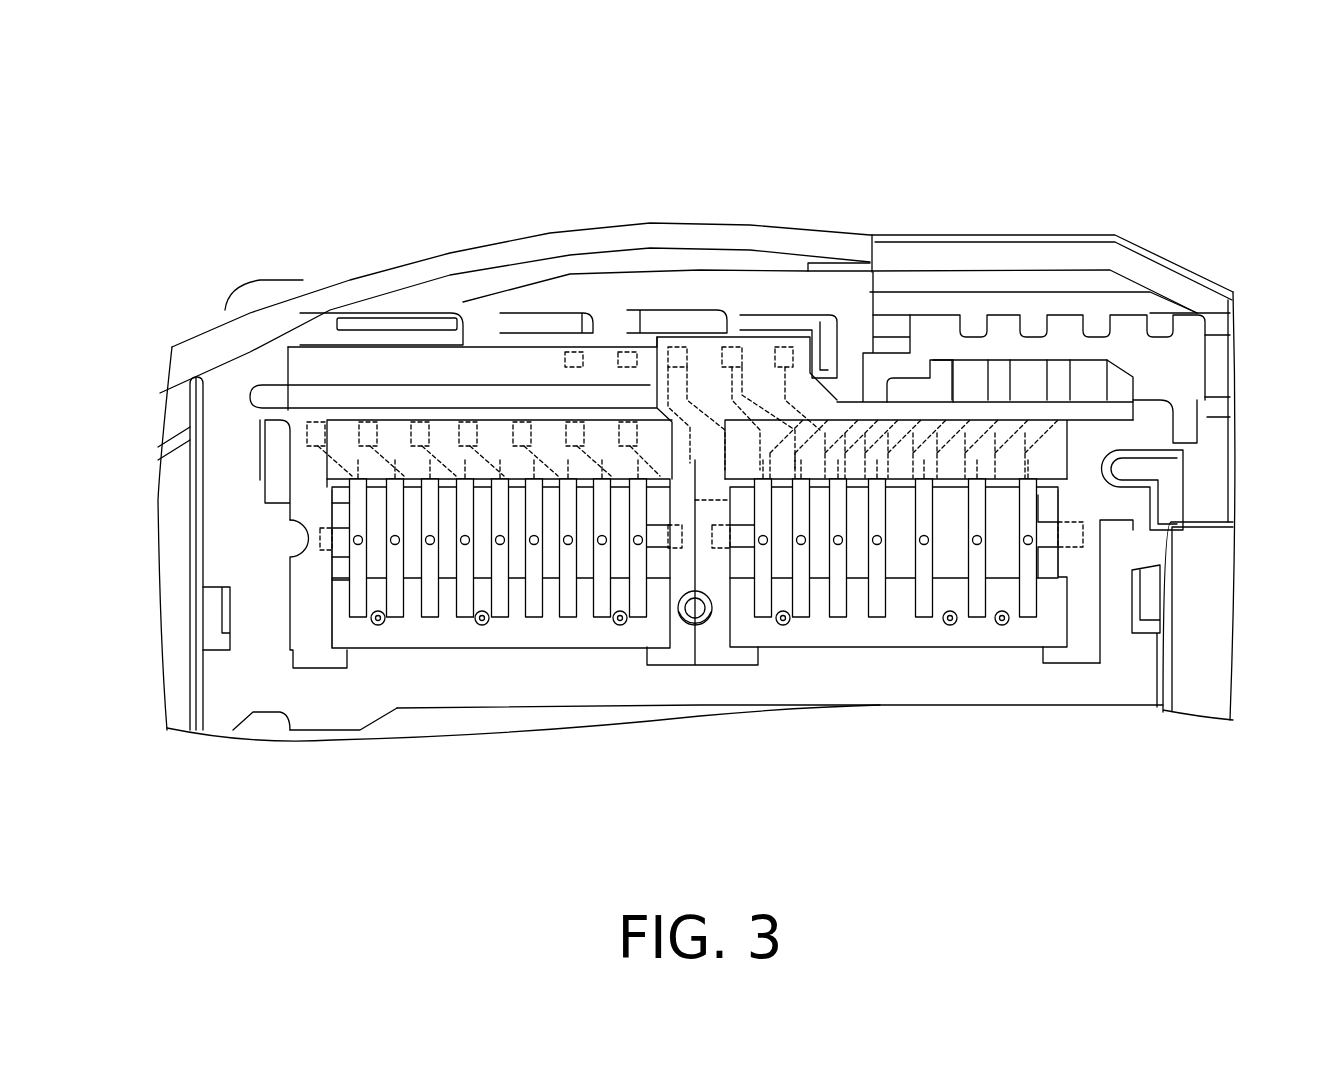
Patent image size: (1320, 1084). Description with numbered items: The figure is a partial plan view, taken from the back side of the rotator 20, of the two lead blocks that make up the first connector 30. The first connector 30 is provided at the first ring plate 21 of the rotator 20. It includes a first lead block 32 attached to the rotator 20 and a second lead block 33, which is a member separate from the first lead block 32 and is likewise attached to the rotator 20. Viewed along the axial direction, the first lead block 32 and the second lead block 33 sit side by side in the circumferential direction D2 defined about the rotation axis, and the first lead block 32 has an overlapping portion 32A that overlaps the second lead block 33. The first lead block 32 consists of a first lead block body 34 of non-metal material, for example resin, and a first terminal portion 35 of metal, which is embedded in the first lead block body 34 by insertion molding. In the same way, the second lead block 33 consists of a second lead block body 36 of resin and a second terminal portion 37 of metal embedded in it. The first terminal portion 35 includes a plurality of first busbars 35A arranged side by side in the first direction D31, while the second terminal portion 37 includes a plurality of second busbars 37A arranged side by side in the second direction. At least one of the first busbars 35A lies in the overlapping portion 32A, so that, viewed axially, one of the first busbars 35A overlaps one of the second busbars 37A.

The rotator 20 is at (1172, 247).
The first ring plate 21 is at (1215, 548).
The first connector 30 is at (597, 214).
The first lead block 32 is at (557, 653).
The overlapping portion 32A is at (712, 340).
The second lead block 33 is at (912, 653).
The first lead block body 34 is at (498, 637).
The first terminal portion 35 is at (345, 567).
The first busbars 35A is at (484, 478).
The second lead block body 36 is at (853, 633).
The second terminal portion 37 is at (1046, 557).
The second busbars 37A is at (767, 478).
The circumferential direction D2 is at (686, 109).
The first direction D31 is at (1098, 792).